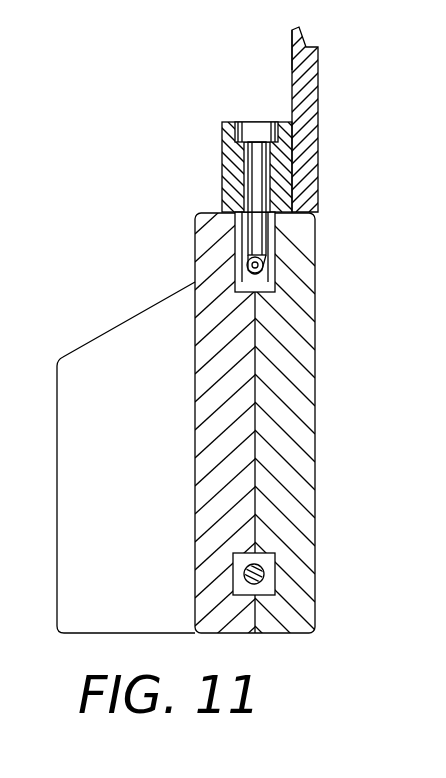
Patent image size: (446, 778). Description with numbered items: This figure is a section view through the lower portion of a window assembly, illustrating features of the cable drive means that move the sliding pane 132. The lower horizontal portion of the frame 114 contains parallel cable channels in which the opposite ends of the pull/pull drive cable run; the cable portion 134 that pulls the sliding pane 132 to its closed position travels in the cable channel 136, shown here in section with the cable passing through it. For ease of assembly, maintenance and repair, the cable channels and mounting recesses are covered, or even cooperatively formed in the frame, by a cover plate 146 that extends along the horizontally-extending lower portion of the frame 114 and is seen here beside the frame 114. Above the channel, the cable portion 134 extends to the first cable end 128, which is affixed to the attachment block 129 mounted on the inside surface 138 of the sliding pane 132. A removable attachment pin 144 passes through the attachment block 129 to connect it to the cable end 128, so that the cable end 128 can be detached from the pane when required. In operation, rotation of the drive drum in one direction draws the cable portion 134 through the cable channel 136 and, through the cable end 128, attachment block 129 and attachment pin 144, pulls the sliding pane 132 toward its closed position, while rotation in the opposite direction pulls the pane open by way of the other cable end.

The frame 114 is at (197, 255).
The first cable end 128 is at (275, 250).
The attachment block 129 is at (228, 122).
The sliding pane 132 is at (318, 74).
The cable portion 134 is at (233, 563).
The cable channel 136 is at (275, 575).
The inside surface 138 is at (292, 62).
The removable attachment pin 144 is at (250, 178).
The cover plate 146 is at (307, 345).